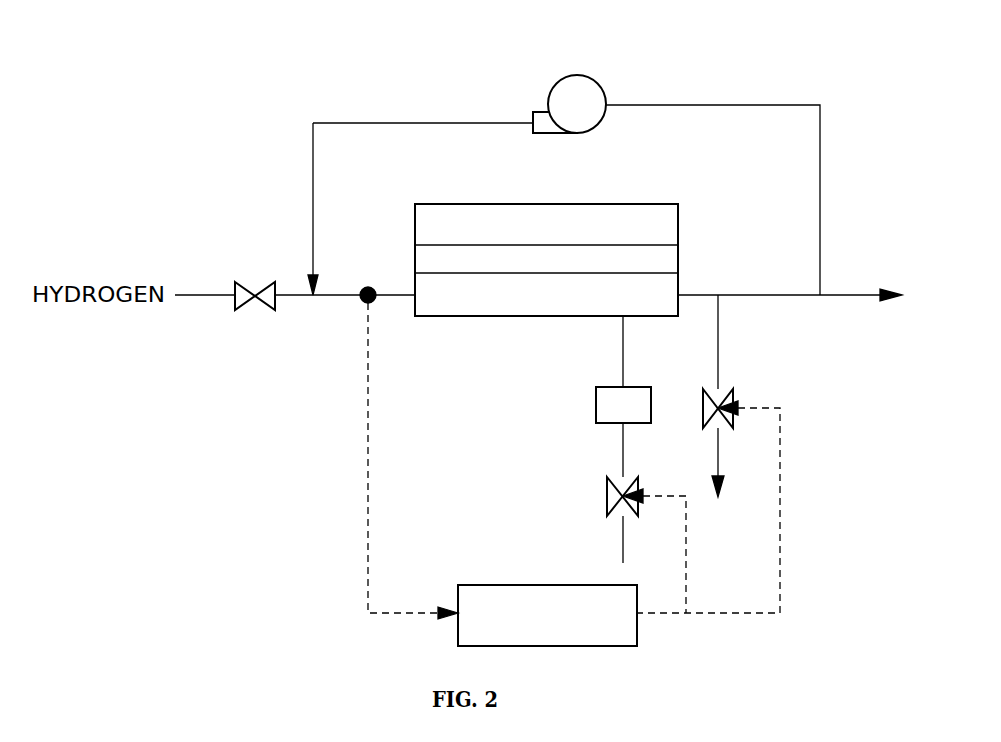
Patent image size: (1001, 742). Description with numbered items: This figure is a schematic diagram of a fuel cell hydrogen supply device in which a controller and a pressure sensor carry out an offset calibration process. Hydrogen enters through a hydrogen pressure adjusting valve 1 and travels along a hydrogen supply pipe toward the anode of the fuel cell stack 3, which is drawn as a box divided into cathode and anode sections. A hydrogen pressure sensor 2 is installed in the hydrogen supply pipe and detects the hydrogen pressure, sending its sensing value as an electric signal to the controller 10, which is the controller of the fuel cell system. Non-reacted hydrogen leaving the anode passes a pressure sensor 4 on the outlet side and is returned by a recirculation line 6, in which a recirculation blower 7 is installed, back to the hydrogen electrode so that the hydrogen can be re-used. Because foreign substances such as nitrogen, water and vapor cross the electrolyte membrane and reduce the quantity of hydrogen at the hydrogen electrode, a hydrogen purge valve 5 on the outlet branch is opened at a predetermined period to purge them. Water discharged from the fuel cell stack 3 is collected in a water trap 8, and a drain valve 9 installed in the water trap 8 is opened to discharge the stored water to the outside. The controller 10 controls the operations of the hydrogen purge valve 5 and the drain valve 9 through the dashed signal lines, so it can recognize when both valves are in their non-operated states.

The hydrogen pressure adjusting valve 1 is at (247, 282).
The hydrogen pressure sensor 2 is at (361, 297).
The fuel cell stack 3 is at (458, 316).
The pressure sensor 4 is at (765, 295).
The hydrogen purge valve 5 is at (722, 389).
The recirculation line 6 is at (820, 173).
The recirculation blower 7 is at (558, 80).
The water trap 8 is at (596, 403).
The drain valve 9 is at (607, 500).
The controller 10 is at (475, 585).